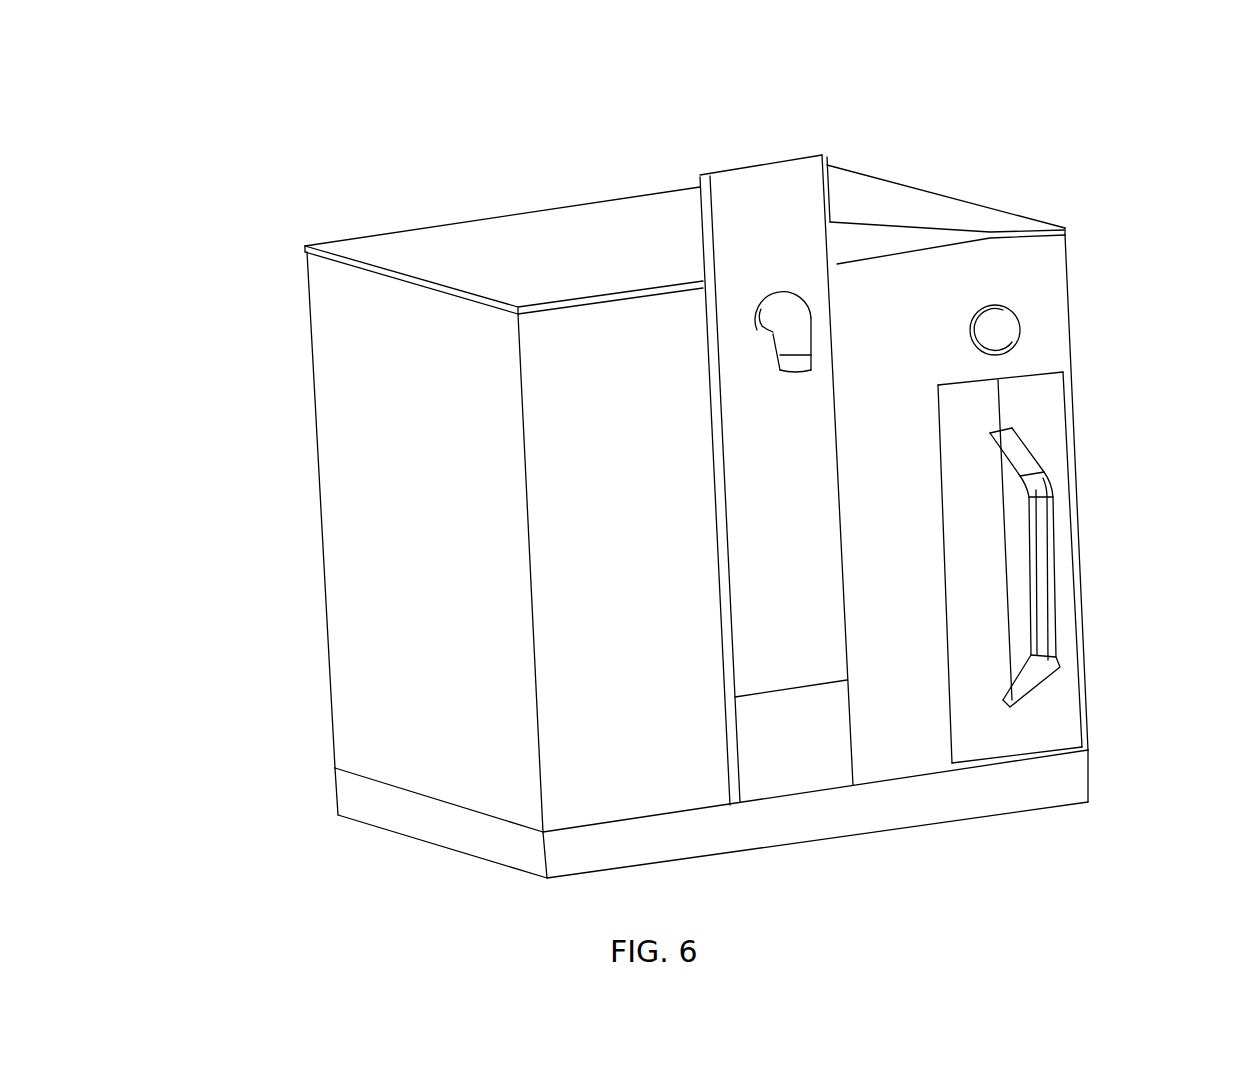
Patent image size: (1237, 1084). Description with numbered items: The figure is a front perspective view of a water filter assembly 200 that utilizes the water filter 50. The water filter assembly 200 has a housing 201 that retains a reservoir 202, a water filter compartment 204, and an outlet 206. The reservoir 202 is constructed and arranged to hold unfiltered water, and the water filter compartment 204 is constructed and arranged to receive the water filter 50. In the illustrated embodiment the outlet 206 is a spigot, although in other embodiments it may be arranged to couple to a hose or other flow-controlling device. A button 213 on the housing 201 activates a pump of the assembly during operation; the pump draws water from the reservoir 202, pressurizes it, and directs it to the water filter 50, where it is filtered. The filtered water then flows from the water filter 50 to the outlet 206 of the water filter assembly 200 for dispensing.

The water filter assembly 200 is at (1120, 98).
The housing 201 is at (520, 242).
The reservoir 202 is at (372, 621).
The water filter compartment 204 is at (1050, 378).
The outlet 206 is at (792, 340).
The button 213 is at (1003, 330).
The water filter 50 is at (1054, 573).